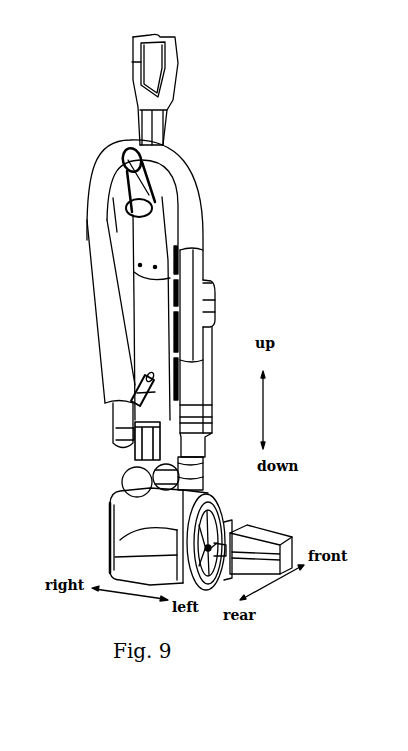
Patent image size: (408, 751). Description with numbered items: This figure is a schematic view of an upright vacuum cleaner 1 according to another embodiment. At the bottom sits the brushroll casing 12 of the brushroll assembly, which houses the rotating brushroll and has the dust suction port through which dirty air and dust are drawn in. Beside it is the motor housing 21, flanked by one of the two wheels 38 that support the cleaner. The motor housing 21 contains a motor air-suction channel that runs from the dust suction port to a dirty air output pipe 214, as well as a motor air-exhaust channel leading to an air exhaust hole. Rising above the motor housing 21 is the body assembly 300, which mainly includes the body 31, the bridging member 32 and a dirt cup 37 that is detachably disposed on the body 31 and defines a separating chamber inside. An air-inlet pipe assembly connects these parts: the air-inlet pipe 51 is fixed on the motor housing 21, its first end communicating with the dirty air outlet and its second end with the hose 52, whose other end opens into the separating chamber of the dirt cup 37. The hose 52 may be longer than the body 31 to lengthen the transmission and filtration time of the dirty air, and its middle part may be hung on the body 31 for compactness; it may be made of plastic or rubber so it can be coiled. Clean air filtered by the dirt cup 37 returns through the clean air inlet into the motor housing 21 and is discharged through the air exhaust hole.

The upright vacuum cleaner 1 is at (206, 121).
The hose 52 is at (107, 290).
The dirt cup 37 is at (207, 310).
The body assembly 300 is at (78, 367).
The body 31 is at (132, 403).
The bridging member 32 is at (135, 453).
The air-inlet pipe 51 is at (198, 452).
The dirty air output pipe 214 is at (201, 468).
The motor housing 21 is at (127, 540).
The wheel 38 is at (221, 518).
The brushroll casing 12 is at (247, 538).